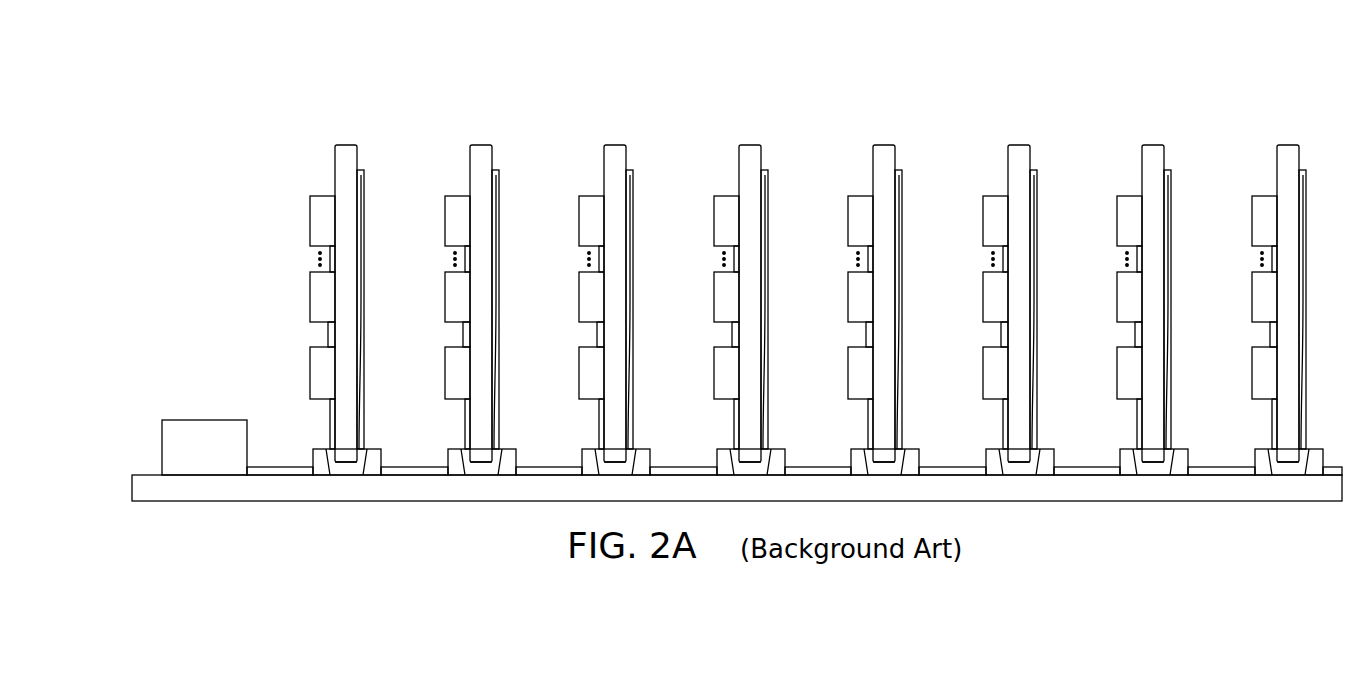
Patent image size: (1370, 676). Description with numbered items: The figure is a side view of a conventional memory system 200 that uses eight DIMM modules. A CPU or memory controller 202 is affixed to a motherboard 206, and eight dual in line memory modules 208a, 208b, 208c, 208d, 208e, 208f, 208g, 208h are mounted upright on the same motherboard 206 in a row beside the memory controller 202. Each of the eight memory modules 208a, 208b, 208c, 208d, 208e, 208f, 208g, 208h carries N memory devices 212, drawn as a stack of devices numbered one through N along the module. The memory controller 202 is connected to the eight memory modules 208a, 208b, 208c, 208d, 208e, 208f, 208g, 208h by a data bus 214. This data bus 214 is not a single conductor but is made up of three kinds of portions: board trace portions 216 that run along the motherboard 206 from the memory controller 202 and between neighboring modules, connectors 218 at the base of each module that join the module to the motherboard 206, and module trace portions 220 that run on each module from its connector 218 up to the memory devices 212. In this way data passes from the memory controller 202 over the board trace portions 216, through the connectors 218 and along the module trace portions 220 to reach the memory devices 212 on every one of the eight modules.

The memory system 200 is at (231, 88).
The memory controller 202 is at (197, 420).
The motherboard 206 is at (357, 501).
The dual in line memory module 208a is at (346, 145).
The dual in line memory module 208b is at (511, 272).
The dual in line memory module 208c is at (644, 272).
The dual in line memory module 208d is at (780, 272).
The dual in line memory module 208e is at (913, 272).
The dual in line memory module 208f is at (1046, 272).
The dual in line memory module 208g is at (1183, 272).
The dual in line memory module 208h is at (1318, 272).
The memory device 212 is at (310, 222).
The data bus 214 is at (266, 467).
The board trace portion 216 is at (277, 467).
The connector 218 is at (370, 449).
The module trace portion 220 is at (328, 333).